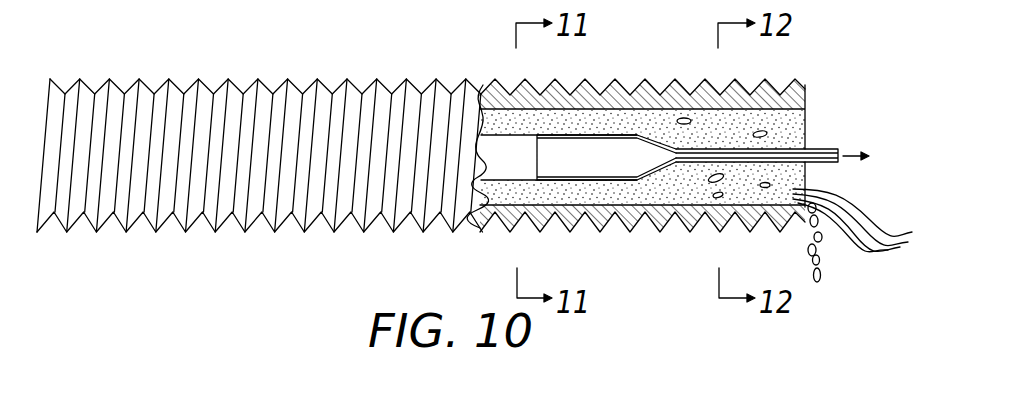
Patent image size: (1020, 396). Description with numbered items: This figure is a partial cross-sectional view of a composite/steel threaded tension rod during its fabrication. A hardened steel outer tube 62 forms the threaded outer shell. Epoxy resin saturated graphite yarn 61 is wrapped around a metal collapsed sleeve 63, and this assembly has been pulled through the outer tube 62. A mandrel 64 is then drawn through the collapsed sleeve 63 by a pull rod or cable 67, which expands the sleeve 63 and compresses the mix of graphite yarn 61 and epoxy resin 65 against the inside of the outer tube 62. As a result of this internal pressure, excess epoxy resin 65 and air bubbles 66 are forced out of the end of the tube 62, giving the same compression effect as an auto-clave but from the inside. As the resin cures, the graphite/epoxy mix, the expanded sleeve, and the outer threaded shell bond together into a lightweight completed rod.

The graphite yarn 61 is at (848, 193).
The outer tube 62 is at (806, 85).
The collapsed sleeve 63 is at (685, 167).
The mandrel 64 is at (603, 148).
The epoxy resin 65 is at (721, 136).
The air bubbles 66 is at (716, 198).
The pull rod or cable 67 is at (823, 153).